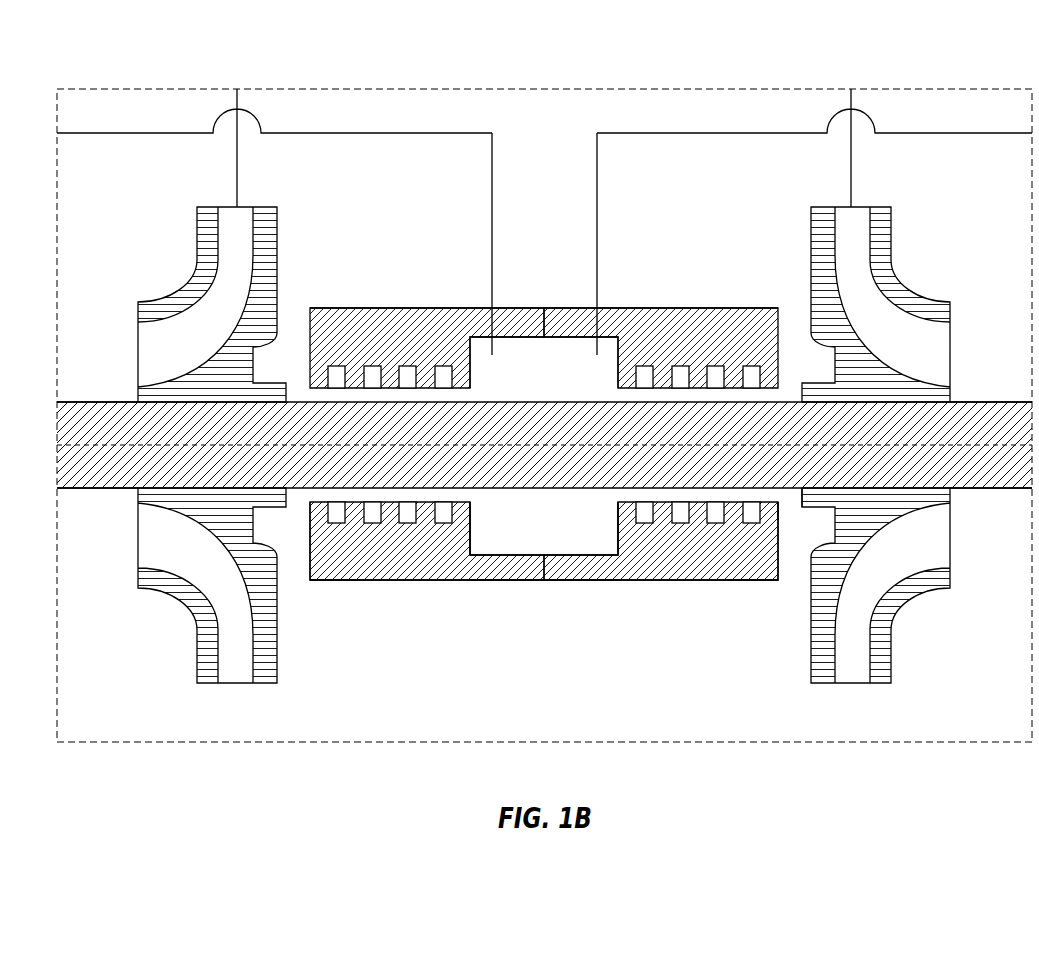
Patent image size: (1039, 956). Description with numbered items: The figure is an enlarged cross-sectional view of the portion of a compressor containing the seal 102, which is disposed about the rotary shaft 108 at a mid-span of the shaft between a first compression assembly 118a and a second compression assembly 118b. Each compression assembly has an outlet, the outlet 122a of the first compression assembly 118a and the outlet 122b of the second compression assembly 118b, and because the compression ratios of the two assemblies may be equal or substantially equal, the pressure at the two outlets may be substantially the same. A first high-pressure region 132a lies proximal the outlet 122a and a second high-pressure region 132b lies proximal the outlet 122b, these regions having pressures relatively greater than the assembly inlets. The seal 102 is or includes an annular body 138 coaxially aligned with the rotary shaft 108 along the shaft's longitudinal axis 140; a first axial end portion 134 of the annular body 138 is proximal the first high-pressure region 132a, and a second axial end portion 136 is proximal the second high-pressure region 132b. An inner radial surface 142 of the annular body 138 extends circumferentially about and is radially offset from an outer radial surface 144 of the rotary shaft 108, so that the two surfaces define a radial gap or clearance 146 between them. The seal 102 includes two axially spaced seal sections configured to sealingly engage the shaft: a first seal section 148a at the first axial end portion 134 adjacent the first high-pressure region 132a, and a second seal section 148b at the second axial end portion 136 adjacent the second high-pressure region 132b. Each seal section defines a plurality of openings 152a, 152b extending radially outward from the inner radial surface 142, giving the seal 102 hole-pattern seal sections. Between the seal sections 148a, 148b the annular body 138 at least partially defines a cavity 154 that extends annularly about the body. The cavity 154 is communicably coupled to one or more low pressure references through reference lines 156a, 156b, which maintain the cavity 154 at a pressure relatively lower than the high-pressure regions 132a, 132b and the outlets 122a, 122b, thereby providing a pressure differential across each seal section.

The seal 102 is at (555, 637).
The rotary shaft 108 is at (524, 432).
The first compression assembly 118a is at (143, 652).
The second compression assembly 118b is at (934, 652).
The outlet of first compression assembly 122a is at (227, 200).
The outlet of second compression assembly 122b is at (860, 200).
The first high-pressure region 132a is at (268, 176).
The second high-pressure region 132b is at (764, 176).
The first axial end portion 134 is at (325, 590).
The second axial end portion 136 is at (729, 590).
The annular body 138 is at (575, 583).
The longitudinal axis 140 is at (963, 443).
The inner radial surface 142 is at (771, 495).
The outer radial surface 144 is at (113, 402).
The radial gap 146 is at (479, 495).
The first seal section 148a is at (417, 573).
The second seal section 148b is at (683, 573).
The openings of first seal section 152a is at (442, 366).
The openings of second seal section 152b is at (646, 366).
The cavity 154 is at (572, 350).
The first reference line 156a is at (492, 170).
The second reference line 156b is at (597, 170).